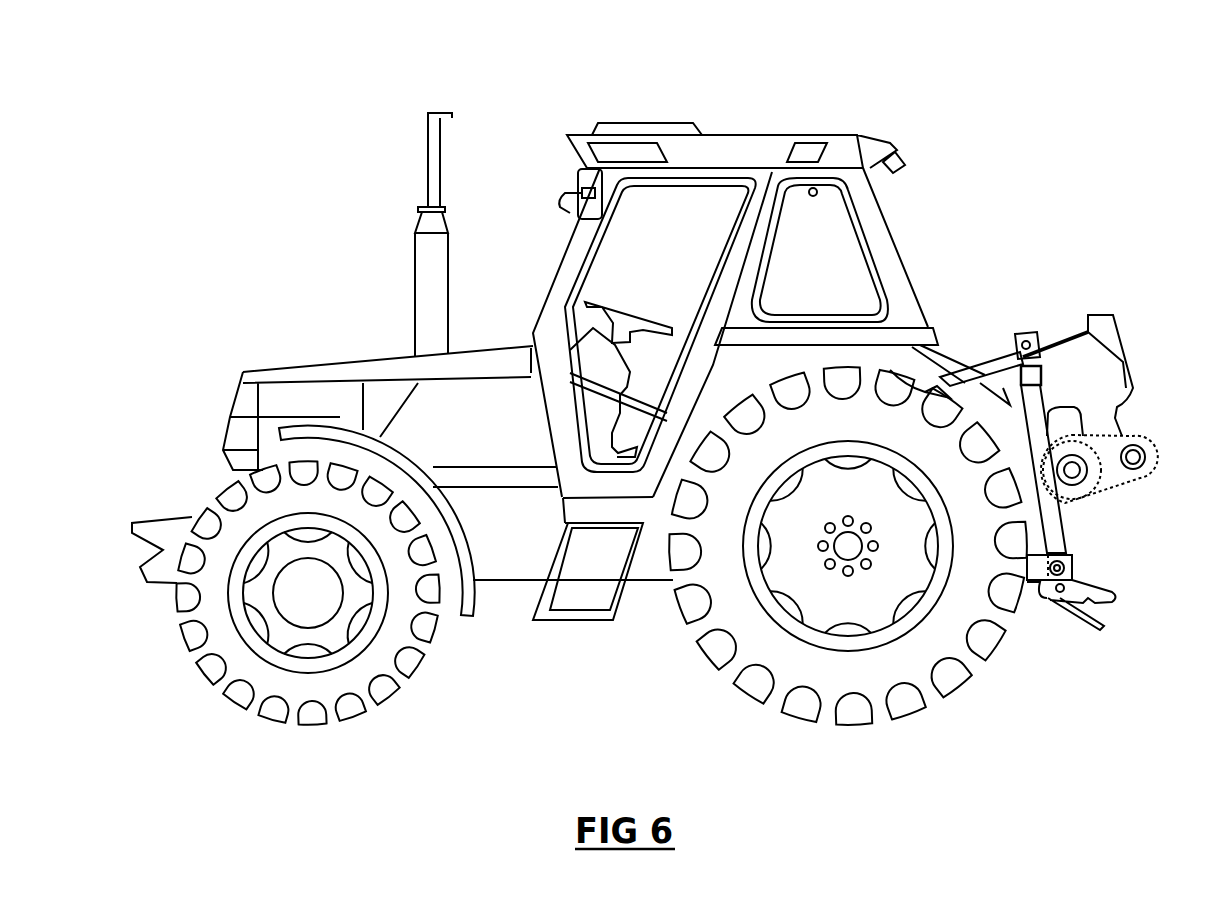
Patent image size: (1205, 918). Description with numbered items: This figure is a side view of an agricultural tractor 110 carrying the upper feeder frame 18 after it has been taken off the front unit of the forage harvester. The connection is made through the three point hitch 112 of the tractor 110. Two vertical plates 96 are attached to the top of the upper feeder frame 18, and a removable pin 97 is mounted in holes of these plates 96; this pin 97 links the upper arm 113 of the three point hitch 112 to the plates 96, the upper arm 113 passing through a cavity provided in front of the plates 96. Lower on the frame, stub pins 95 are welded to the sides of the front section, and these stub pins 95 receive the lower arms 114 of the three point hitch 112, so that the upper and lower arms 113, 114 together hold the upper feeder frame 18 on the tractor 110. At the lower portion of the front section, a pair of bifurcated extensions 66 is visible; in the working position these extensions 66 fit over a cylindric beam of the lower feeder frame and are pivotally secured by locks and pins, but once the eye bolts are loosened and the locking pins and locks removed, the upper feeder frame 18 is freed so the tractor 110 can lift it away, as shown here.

The agricultural tractor 110 is at (622, 110).
The three point hitch 112 is at (997, 327).
The vertical plates 96 is at (1027, 332).
The removable pin 97 is at (1034, 364).
The upper arm 113 is at (987, 363).
The stub pins 95 is at (1067, 565).
The lower arms 114 is at (1028, 586).
The upper feeder frame 18 is at (1128, 355).
The bifurcated extensions 66 is at (1118, 596).